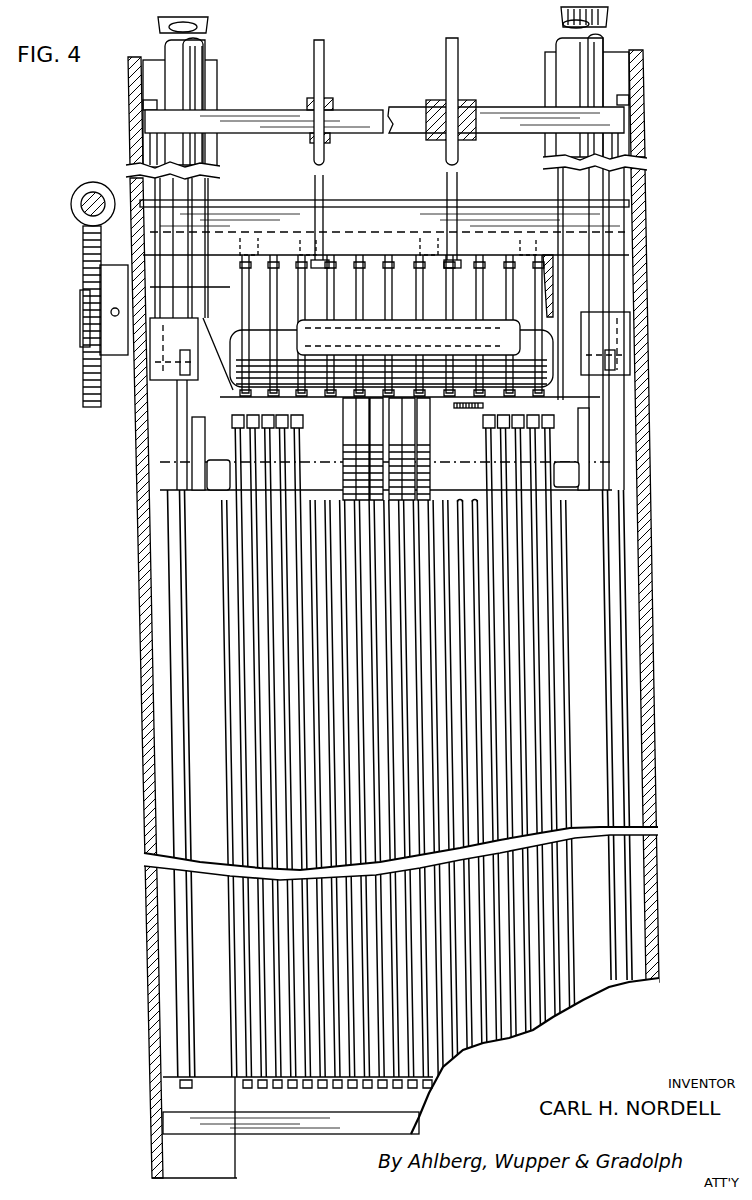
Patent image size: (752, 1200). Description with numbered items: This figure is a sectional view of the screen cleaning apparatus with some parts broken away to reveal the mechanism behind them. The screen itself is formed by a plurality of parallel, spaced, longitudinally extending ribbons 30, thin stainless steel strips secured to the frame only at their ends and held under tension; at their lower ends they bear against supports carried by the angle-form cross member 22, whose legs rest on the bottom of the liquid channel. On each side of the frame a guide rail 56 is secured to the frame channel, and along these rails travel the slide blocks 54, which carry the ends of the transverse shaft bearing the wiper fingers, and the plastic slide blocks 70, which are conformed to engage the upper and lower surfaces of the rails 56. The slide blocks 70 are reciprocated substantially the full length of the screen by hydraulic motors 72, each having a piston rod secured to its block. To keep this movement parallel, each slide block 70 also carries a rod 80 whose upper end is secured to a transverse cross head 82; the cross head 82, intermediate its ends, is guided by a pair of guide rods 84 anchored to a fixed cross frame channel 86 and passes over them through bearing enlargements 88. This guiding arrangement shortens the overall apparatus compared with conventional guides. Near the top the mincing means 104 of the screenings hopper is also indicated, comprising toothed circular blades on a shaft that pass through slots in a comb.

The cross member 22 is at (291, 1124).
The ribbons 30 is at (518, 533).
The slide blocks 54 is at (175, 457).
The guide rails 56 is at (175, 565).
The slide block 70 is at (155, 378).
The hydraulic motors 72 is at (198, 50).
The rod 80 is at (148, 140).
The cross head 82 is at (512, 109).
The guide rods 84 is at (323, 80).
The cross frame channel 86 is at (500, 200).
The bearing enlargements 88 is at (328, 107).
The mincing means 104 is at (548, 367).